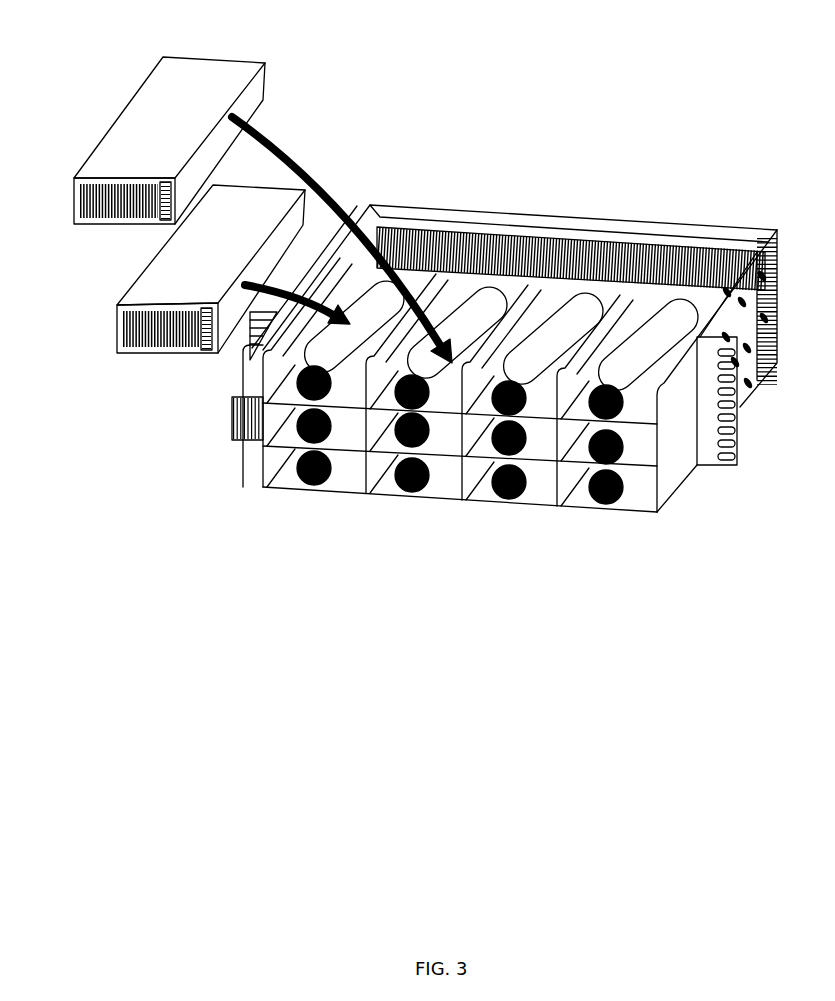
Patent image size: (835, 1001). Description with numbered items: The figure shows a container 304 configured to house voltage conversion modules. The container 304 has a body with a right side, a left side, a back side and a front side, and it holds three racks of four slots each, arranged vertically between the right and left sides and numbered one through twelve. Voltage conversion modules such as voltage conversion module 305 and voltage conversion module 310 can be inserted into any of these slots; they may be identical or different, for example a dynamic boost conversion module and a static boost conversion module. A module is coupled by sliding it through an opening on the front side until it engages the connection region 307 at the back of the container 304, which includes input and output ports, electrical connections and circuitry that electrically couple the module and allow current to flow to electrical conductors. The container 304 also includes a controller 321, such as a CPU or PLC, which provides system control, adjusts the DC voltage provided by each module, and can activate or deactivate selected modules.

The container 304 is at (453, 96).
The voltage conversion module 305 is at (162, 73).
The connection region 307 is at (692, 250).
The voltage conversion module 310 is at (118, 327).
The controller 321 is at (237, 437).